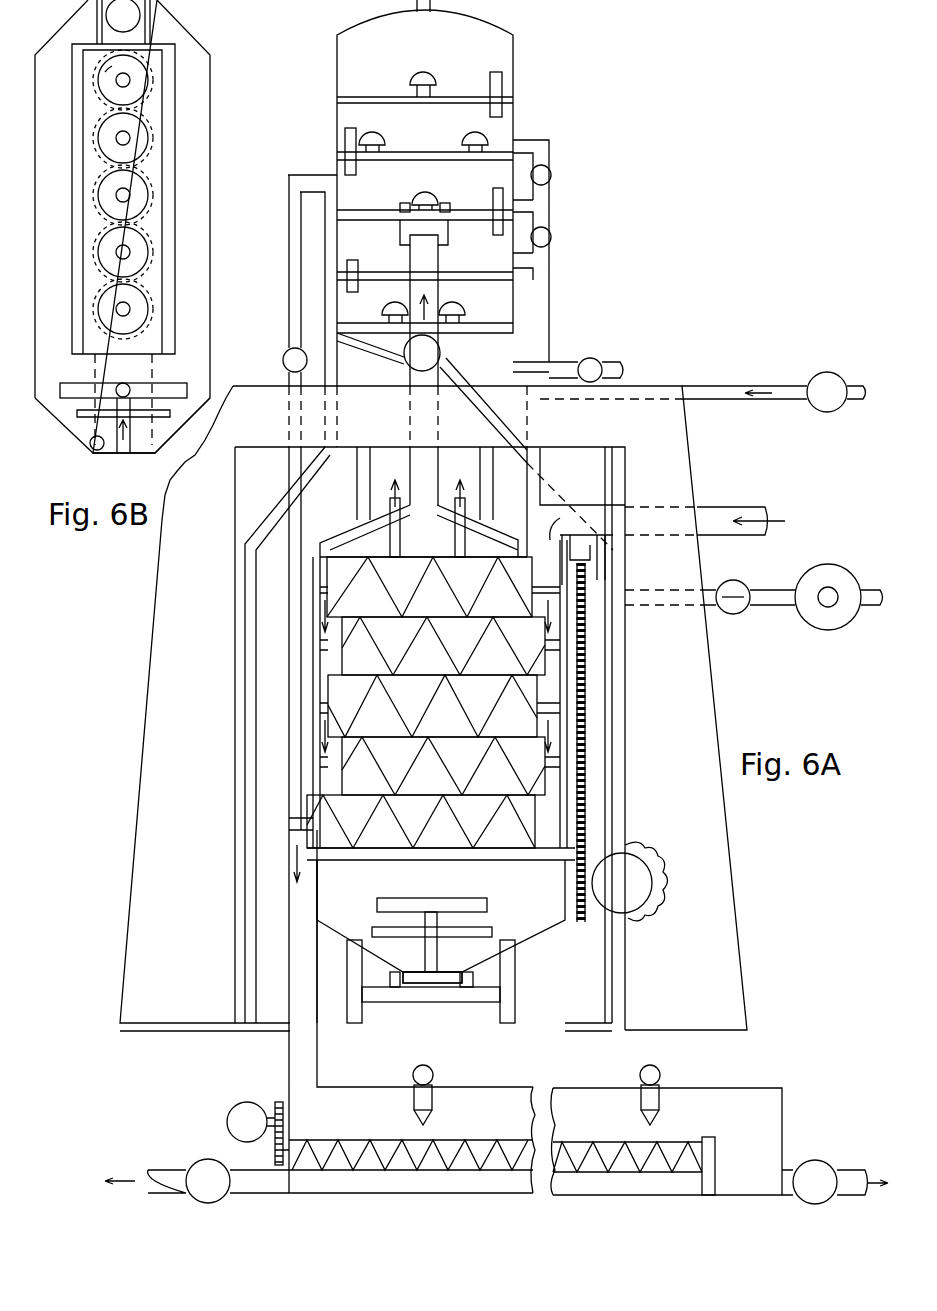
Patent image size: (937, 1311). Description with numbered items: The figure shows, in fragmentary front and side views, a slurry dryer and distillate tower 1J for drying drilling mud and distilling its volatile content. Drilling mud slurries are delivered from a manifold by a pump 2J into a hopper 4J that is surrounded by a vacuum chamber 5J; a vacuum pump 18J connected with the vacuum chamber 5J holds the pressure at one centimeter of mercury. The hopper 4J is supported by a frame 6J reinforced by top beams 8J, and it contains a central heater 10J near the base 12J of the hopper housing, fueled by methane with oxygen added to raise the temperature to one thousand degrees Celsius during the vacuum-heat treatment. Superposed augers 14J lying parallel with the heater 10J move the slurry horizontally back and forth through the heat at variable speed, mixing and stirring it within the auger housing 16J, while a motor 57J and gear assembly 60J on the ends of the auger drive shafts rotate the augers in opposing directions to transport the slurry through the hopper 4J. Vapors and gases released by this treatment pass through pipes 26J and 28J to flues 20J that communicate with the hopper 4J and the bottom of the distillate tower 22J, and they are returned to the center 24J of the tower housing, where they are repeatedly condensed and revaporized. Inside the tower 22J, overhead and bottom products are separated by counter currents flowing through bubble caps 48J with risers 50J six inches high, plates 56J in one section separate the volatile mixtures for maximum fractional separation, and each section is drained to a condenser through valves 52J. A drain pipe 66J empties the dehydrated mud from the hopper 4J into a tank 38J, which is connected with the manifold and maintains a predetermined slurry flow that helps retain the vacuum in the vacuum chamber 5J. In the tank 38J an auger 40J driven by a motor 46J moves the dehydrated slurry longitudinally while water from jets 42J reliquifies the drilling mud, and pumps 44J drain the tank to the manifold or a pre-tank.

In FIG. 6B, the slurry dryer and distillate tower 1J is at (62, 428).
In FIG. 6A, the slurry dryer and distillate tower 1J is at (555, 933).
In FIG. 6A, the pump 2J is at (812, 407).
In FIG. 6B, the hopper 4J is at (175, 194).
In FIG. 6A, the hopper 4J is at (466, 702).
In FIG. 6A, the vacuum chamber 5J is at (270, 572).
In FIG. 6A, the frame 6J is at (515, 1005).
In FIG. 6B, the top beams 8J is at (162, 42).
In FIG. 6A, the top beams 8J is at (458, 447).
In FIG. 6B, the central heater 10J is at (160, 385).
In FIG. 6A, the central heater 10J is at (405, 898).
In FIG. 6B, the base 12J is at (98, 453).
In FIG. 6A, the base 12J is at (482, 962).
In FIG. 6B, the augers 14J is at (148, 80).
In FIG. 6A, the augers 14J is at (545, 635).
In FIG. 6B, the auger housing 16J is at (175, 105).
In FIG. 6A, the auger housing 16J is at (310, 750).
In FIG. 6A, the vacuum pump 18J is at (812, 625).
In FIG. 6A, the flues 20J is at (455, 535).
In FIG. 6A, the distillate tower 22J is at (456, 193).
In FIG. 6A, the center of the tower housing 24J is at (337, 208).
In FIG. 6A, the pipe 26J is at (289, 335).
In FIG. 6A, the pipe 28J is at (442, 292).
In FIG. 6A, the tank 38J is at (702, 1083).
In FIG. 6A, the auger 40J is at (603, 1135).
In FIG. 6A, the jets 42J is at (430, 1122).
In FIG. 6A, the pumps 44J is at (205, 1160).
In FIG. 6A, the motor 46J is at (243, 1103).
In FIG. 6A, the bubble caps 48J is at (378, 140).
In FIG. 6A, the risers 50J is at (410, 88).
In FIG. 6A, the valves 52J is at (560, 185).
In FIG. 6A, the plates 56J is at (436, 172).
In FIG. 6A, the motor 57J is at (650, 870).
In FIG. 6A, the gear assembly 60J is at (599, 726).
In FIG. 6A, the drain pipe 66J is at (289, 1057).